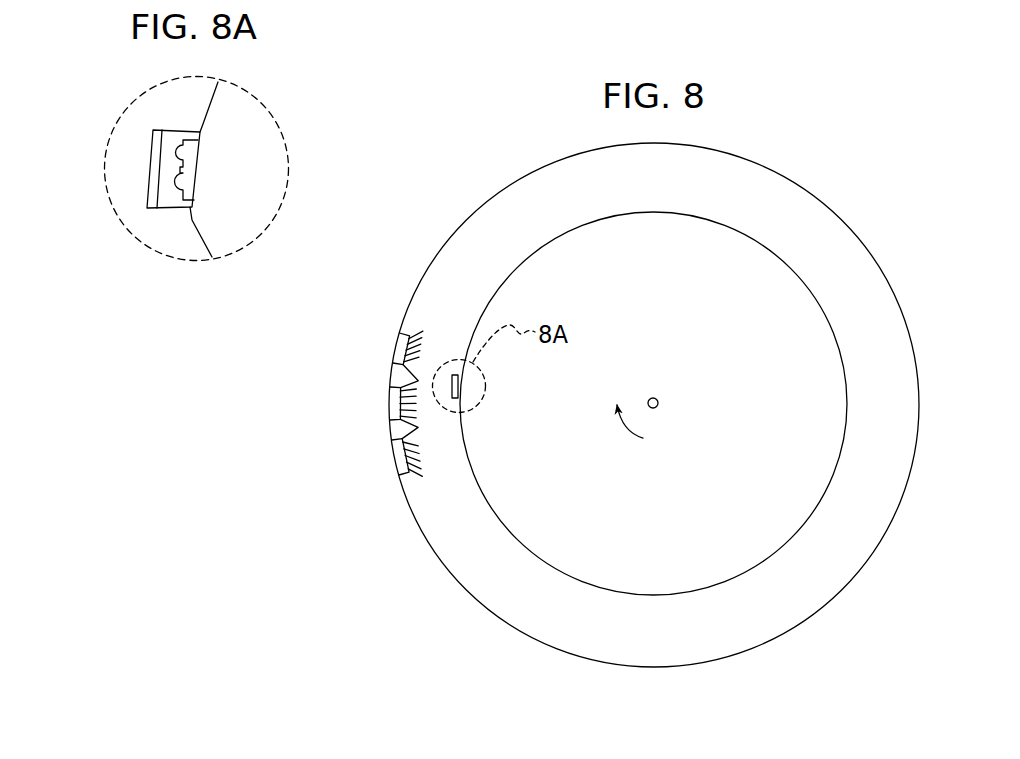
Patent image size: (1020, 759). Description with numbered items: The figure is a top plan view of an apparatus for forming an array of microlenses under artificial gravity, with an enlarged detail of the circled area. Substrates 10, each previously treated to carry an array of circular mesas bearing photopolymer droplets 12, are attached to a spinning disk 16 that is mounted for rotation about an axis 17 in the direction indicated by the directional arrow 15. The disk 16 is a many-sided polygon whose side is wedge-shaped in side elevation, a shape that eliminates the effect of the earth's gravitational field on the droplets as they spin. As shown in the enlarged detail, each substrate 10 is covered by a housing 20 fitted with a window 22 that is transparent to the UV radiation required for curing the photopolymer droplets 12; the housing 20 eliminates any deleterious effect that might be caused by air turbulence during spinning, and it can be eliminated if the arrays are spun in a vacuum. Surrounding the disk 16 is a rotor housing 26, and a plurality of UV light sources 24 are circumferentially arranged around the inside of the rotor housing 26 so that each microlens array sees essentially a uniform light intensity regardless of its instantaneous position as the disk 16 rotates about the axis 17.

In FIG. 8A, the substrate 10 is at (202, 171).
In FIG. 8A, the photopolymer droplets 12 is at (173, 170).
In FIG. 8A, the window 22 is at (163, 174).
In FIG. 8A, the housing 20 is at (167, 211).
In FIG. 8, the rotor housing 26 is at (407, 508).
In FIG. 8, the spinning disk 16 is at (522, 550).
In FIG. 8, the UV light sources 24 is at (379, 415).
In FIG. 8, the axis 17 is at (659, 400).
In FIG. 8, the directional arrow 15 is at (629, 432).